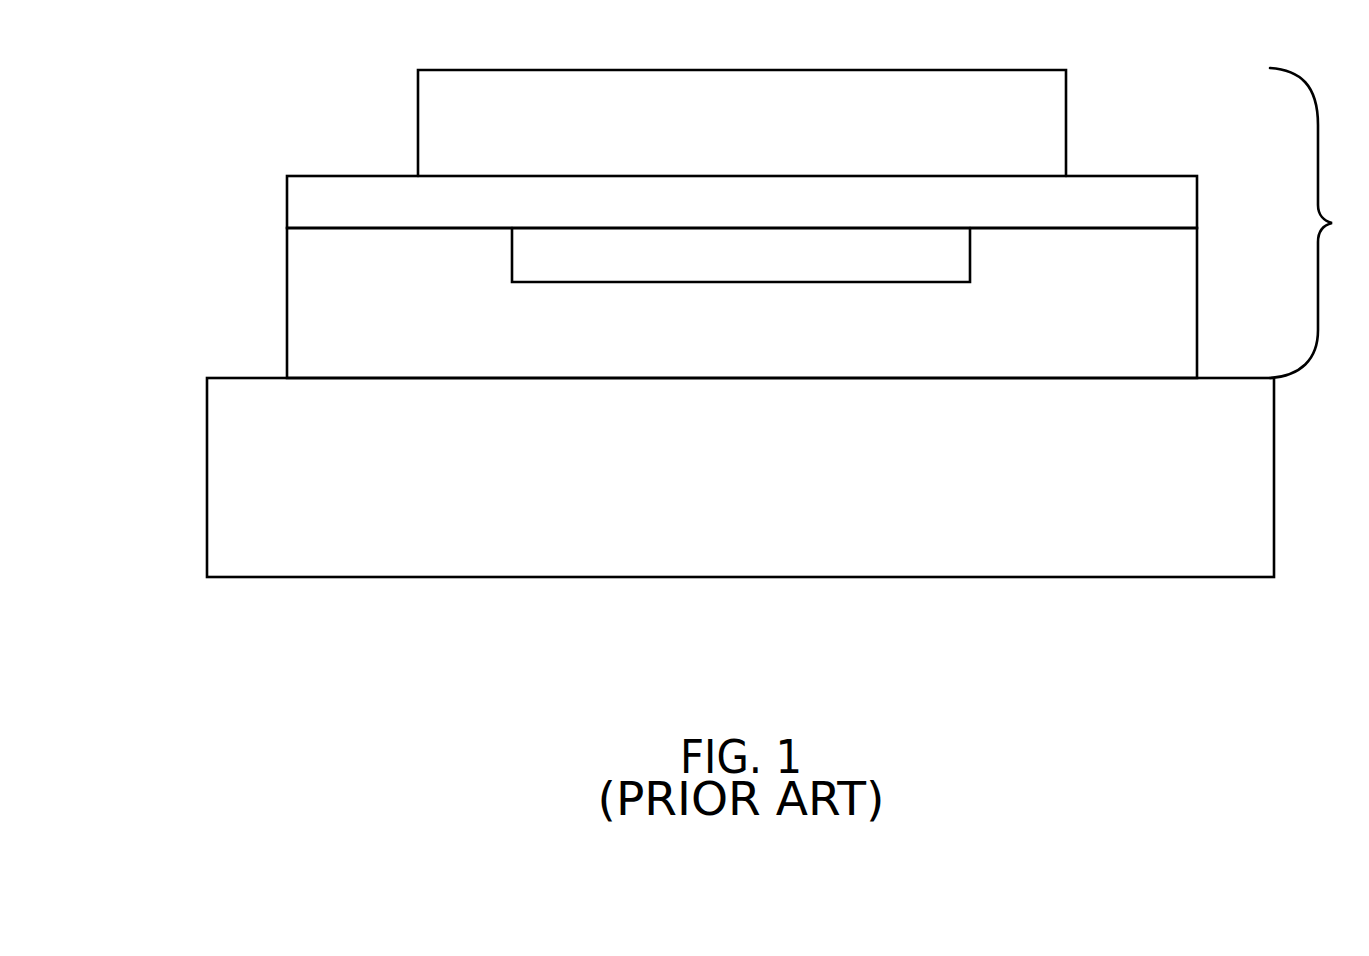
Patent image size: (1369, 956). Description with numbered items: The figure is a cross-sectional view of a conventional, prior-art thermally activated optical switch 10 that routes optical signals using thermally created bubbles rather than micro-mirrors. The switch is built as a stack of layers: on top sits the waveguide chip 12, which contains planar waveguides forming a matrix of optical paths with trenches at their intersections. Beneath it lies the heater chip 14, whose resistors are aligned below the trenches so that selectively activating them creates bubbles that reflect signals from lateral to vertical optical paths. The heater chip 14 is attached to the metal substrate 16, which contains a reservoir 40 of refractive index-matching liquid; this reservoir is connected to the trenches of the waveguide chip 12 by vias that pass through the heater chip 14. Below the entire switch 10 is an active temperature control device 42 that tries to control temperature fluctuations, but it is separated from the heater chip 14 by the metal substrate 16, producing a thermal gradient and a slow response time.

The thermally activated optical switch 10 is at (1319, 223).
The waveguide chip 12 is at (428, 129).
The heater chip 14 is at (305, 210).
The metal substrate 16 is at (305, 326).
The reservoir 40 is at (963, 270).
The active temperature control device 42 is at (218, 494).